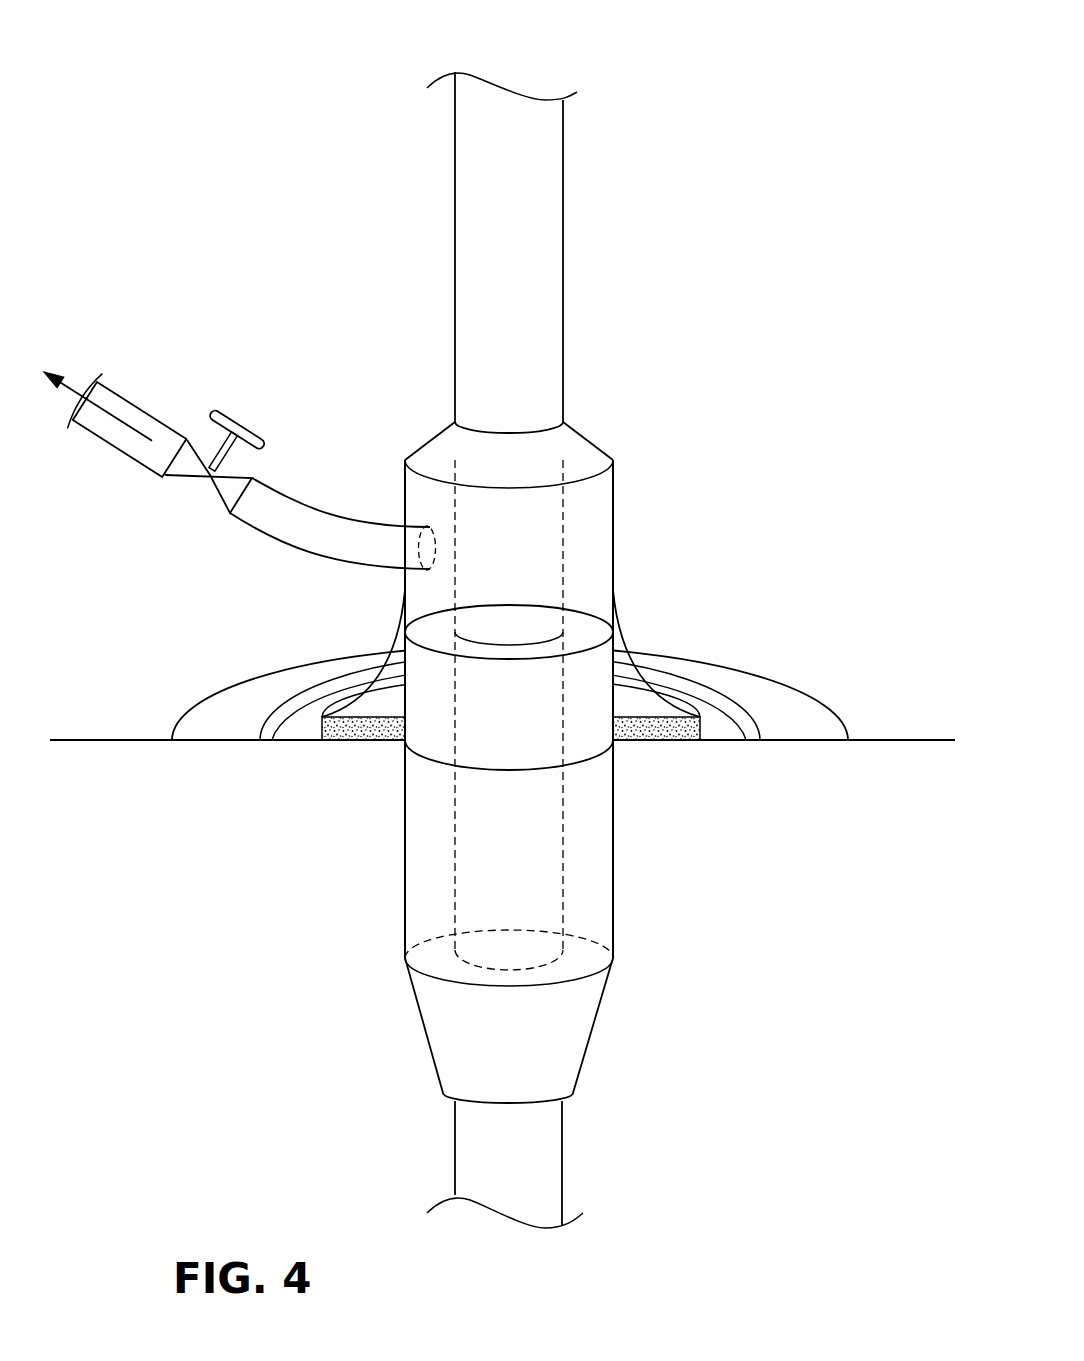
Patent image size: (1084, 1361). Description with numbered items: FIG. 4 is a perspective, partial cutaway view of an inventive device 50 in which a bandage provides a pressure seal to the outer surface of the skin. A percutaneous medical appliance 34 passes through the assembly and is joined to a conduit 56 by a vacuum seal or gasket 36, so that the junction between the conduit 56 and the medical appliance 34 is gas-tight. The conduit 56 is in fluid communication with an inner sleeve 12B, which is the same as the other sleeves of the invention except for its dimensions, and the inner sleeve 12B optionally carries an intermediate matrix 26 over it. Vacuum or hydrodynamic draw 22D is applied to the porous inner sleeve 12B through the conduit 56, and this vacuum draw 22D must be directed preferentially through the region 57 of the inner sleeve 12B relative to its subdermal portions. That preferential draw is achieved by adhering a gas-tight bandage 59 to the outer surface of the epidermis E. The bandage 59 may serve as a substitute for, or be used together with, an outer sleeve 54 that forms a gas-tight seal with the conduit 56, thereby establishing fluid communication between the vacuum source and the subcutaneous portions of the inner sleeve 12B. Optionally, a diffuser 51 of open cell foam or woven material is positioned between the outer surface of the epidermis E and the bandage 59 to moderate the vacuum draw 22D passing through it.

The inventive device 50 is at (672, 84).
The percutaneous medical appliance 34 is at (523, 203).
The vacuum seal or gasket 36 is at (563, 422).
The conduit 56 is at (615, 490).
The vacuum or hydrodynamic draw 22D is at (112, 410).
The region of porous inner sleeve 57 is at (367, 692).
The gas-tight bandage 59 is at (227, 707).
The outer sleeve 54 is at (671, 650).
The diffuser 51 is at (655, 735).
The epidermis E is at (871, 801).
The inner sleeve 12B is at (590, 850).
The intermediate matrix 26 is at (592, 960).